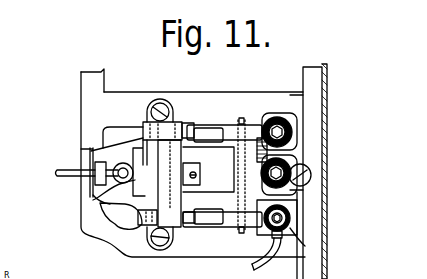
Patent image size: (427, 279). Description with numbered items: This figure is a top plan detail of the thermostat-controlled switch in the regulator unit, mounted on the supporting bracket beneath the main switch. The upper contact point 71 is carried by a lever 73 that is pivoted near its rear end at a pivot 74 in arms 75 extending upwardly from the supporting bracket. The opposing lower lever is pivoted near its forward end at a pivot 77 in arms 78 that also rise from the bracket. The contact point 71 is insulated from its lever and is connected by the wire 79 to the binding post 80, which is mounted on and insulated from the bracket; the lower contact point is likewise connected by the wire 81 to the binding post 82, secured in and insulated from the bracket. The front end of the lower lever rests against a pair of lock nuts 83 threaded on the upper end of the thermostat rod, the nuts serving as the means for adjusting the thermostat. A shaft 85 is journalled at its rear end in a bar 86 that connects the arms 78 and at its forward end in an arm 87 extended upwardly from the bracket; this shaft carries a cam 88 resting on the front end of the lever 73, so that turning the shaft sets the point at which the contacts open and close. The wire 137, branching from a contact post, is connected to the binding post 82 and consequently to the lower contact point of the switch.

The contact point 71 is at (308, 158).
The lever 73 is at (214, 175).
The pivot 74 is at (240, 123).
The arms 75 is at (250, 131).
The pivot 77 is at (142, 221).
The arms 78 is at (151, 166).
The wire 79 is at (268, 156).
The binding post 80 is at (282, 118).
The wire 81 is at (290, 199).
The binding post 82 is at (290, 227).
The lock nuts 83 is at (93, 200).
The shaft 85 is at (72, 176).
The bar 86 is at (161, 168).
The arm 87 is at (90, 150).
The cam 88 is at (152, 168).
The wire 137 is at (252, 267).